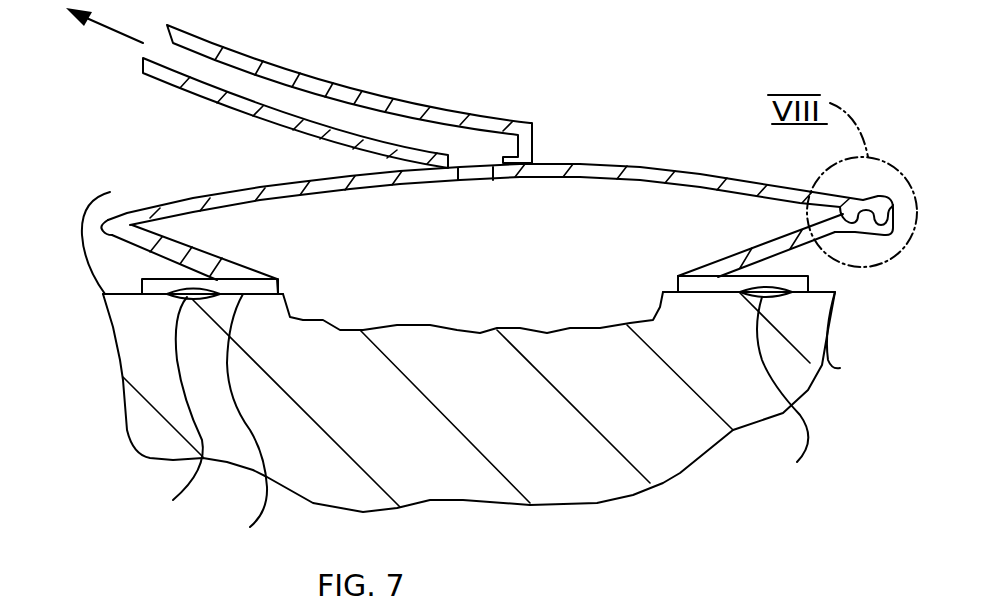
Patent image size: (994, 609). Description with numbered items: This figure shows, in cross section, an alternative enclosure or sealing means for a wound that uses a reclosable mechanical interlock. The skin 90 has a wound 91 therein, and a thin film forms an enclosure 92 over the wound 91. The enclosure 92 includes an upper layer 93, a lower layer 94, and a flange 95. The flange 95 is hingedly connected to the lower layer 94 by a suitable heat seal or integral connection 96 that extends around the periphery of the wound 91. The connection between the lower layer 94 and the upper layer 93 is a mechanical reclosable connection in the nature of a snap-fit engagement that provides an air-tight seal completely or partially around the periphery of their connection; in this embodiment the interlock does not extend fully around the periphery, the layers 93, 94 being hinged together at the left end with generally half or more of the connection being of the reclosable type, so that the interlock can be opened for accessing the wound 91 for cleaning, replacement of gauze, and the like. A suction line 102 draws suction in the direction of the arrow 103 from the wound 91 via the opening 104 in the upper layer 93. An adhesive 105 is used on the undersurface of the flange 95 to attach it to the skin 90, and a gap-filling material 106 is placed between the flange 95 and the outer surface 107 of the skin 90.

The skin 90 is at (593, 463).
The wound 91 is at (415, 300).
The enclosure 92 is at (513, 206).
The upper layer 93 is at (686, 171).
The lower layer 94 is at (215, 258).
The flange 95 is at (163, 279).
The heat seal or integral connection 96 is at (280, 278).
The suction line 102 is at (277, 63).
The arrow 103 is at (120, 33).
The opening 104 is at (480, 176).
The adhesive 105 is at (225, 421).
The gap-filling material 106 is at (462, 407).
The outer surface of the skin 107 is at (483, 277).